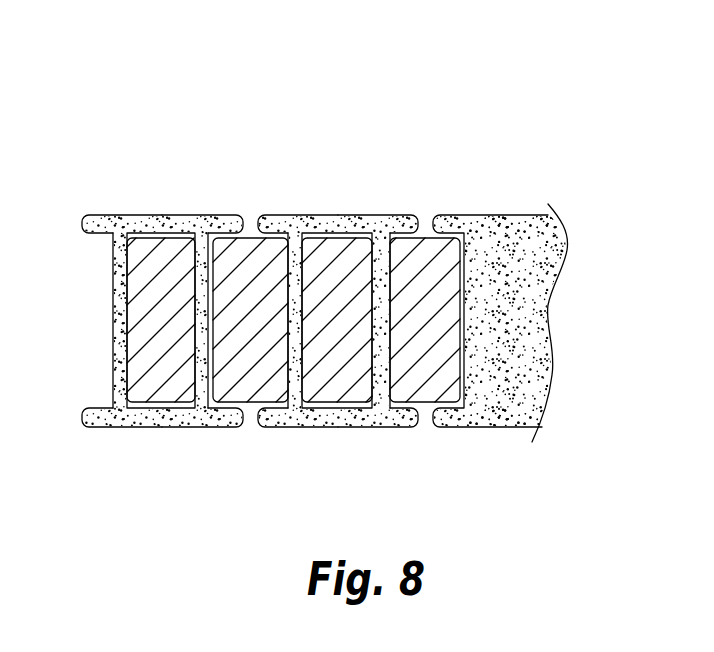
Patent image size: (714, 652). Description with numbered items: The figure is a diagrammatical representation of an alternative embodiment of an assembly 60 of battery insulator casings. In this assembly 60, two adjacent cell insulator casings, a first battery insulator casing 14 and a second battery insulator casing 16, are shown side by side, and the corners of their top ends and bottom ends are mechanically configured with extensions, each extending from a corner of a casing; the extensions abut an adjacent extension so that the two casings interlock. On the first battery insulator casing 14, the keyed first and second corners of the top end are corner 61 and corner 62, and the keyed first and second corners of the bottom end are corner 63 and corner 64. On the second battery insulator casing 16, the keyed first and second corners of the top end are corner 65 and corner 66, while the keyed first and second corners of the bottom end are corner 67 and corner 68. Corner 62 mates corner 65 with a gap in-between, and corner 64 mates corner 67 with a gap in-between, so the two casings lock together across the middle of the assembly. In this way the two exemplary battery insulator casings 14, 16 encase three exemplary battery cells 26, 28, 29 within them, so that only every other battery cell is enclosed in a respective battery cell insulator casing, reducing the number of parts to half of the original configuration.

The assembly of battery insulator casings 60 is at (542, 98).
The first battery insulator casing 14 is at (142, 304).
The second battery insulator casing 16 is at (350, 307).
The battery cell 26 is at (147, 326).
The battery cell 28 is at (235, 326).
The battery cell 29 is at (323, 326).
The keyed first corner of the top end of the first battery insulator casing 61 is at (83, 216).
The keyed second corner of the top end of the first battery insulator casing 62 is at (237, 215).
The keyed first corner of the bottom end of the first battery insulator casing 63 is at (83, 428).
The keyed second corner of the bottom end of the first battery insulator casing 64 is at (238, 428).
The keyed first corner of the top end of the second battery insulator casing 65 is at (260, 215).
The keyed second corner of the top end of the second battery insulator casing 66 is at (413, 215).
The keyed first corner of the bottom end of the second battery insulator casing 67 is at (260, 428).
The keyed second corner of the bottom end of the second battery insulator casing 68 is at (413, 428).